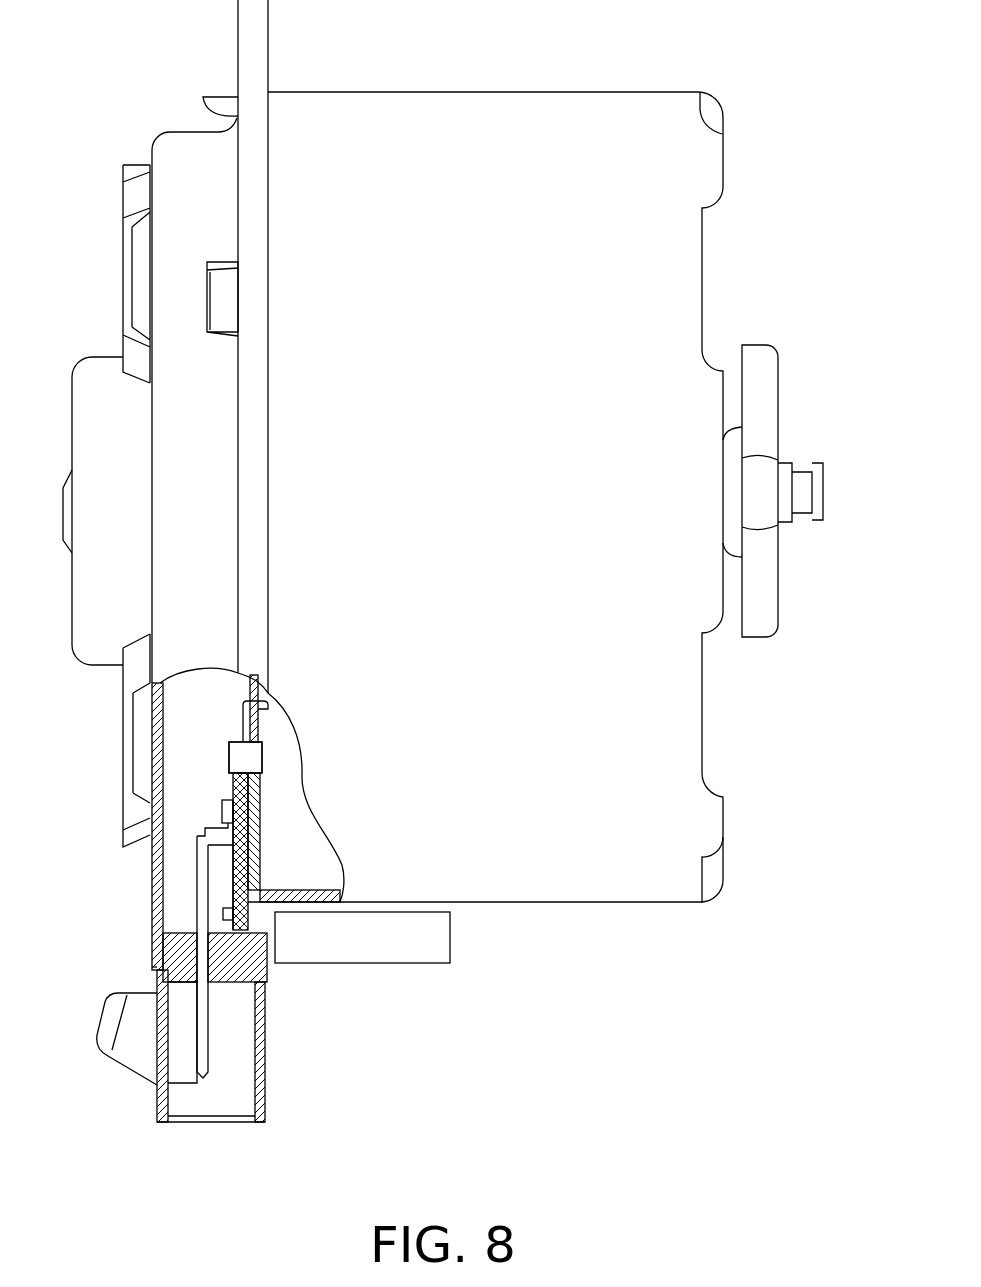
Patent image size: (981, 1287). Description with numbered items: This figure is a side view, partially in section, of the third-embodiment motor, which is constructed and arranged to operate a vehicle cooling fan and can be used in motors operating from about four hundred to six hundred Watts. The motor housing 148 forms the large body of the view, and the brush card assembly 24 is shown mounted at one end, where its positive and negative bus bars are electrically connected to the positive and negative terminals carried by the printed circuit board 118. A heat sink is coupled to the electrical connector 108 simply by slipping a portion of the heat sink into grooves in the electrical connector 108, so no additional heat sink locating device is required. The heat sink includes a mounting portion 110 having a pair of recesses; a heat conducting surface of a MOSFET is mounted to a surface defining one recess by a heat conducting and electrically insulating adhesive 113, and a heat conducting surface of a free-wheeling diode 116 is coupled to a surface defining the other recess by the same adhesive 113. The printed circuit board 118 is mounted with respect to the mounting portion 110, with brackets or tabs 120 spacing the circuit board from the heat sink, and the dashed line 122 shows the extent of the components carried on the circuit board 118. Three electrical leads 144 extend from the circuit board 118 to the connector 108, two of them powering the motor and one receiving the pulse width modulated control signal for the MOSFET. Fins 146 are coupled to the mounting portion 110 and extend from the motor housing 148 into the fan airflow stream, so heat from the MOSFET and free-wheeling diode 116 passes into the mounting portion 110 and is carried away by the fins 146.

The brush card assembly 24 is at (262, 795).
The electrical connector 108 is at (265, 1100).
The mounting portion 110 is at (247, 884).
The heat conducting and electrically insulating adhesive 113 is at (232, 896).
The free-wheeling diode 116 is at (217, 863).
The printed circuit board 118 is at (228, 775).
The brackets or tabs 120 is at (221, 813).
The dashed line 122 is at (202, 832).
The electrical leads 144 is at (209, 1048).
The fins 146 is at (428, 952).
The motor housing 148 is at (556, 893).